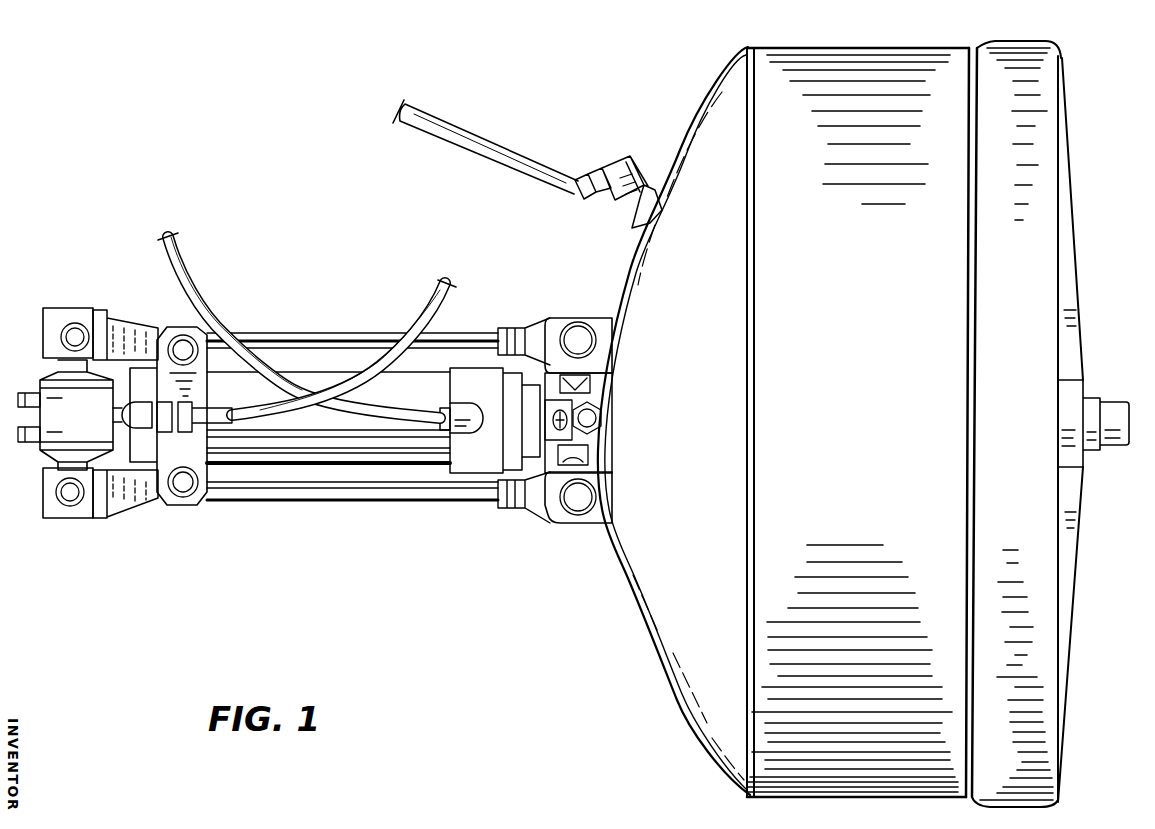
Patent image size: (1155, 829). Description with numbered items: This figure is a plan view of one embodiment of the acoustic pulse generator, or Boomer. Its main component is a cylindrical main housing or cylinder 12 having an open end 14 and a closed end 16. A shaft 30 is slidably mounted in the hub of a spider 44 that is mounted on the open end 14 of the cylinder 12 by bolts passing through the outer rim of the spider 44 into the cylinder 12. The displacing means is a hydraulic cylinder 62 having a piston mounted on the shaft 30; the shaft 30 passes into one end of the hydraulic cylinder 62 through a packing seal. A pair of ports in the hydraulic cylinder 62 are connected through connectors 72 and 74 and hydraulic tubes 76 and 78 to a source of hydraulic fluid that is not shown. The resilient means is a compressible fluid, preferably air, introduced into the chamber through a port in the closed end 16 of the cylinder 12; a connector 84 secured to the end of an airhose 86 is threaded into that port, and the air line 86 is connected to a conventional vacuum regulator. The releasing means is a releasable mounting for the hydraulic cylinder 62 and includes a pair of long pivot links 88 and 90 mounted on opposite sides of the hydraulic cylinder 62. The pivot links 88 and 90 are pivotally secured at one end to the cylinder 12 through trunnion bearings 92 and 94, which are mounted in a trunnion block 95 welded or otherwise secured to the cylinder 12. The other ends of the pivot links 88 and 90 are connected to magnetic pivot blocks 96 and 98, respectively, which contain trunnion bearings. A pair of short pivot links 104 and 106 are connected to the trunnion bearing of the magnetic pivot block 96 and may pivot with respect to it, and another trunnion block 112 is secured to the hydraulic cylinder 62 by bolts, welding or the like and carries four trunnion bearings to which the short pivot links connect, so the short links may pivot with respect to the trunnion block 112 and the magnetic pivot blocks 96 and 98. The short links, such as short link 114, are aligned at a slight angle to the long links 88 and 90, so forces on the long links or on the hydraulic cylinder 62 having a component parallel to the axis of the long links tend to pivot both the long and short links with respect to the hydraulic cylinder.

The cylindrical main housing 12 is at (888, 221).
The open end 14 is at (1066, 73).
The closed end 16 is at (713, 257).
The shaft 30 is at (1135, 434).
The spider 44 is at (1070, 304).
The hydraulic cylinder 62 is at (328, 385).
The connector 72 is at (130, 412).
The connector 74 is at (480, 414).
The hydraulic tube 76 is at (253, 422).
The hydraulic tube 78 is at (200, 282).
The connector 84 is at (630, 185).
The airhose 86 is at (488, 152).
The pivot link 88 is at (322, 496).
The pivot link 90 is at (276, 334).
The trunnion bearing 92 is at (582, 506).
The trunnion bearing 94 is at (582, 338).
The trunnion block 95 is at (552, 520).
The magnetic pivot block 96 is at (76, 522).
The magnetic pivot block 98 is at (66, 316).
The short pivot link 104 is at (140, 490).
The short pivot link 106 is at (134, 340).
The trunnion block 112 is at (208, 389).
The short link 114 is at (190, 496).